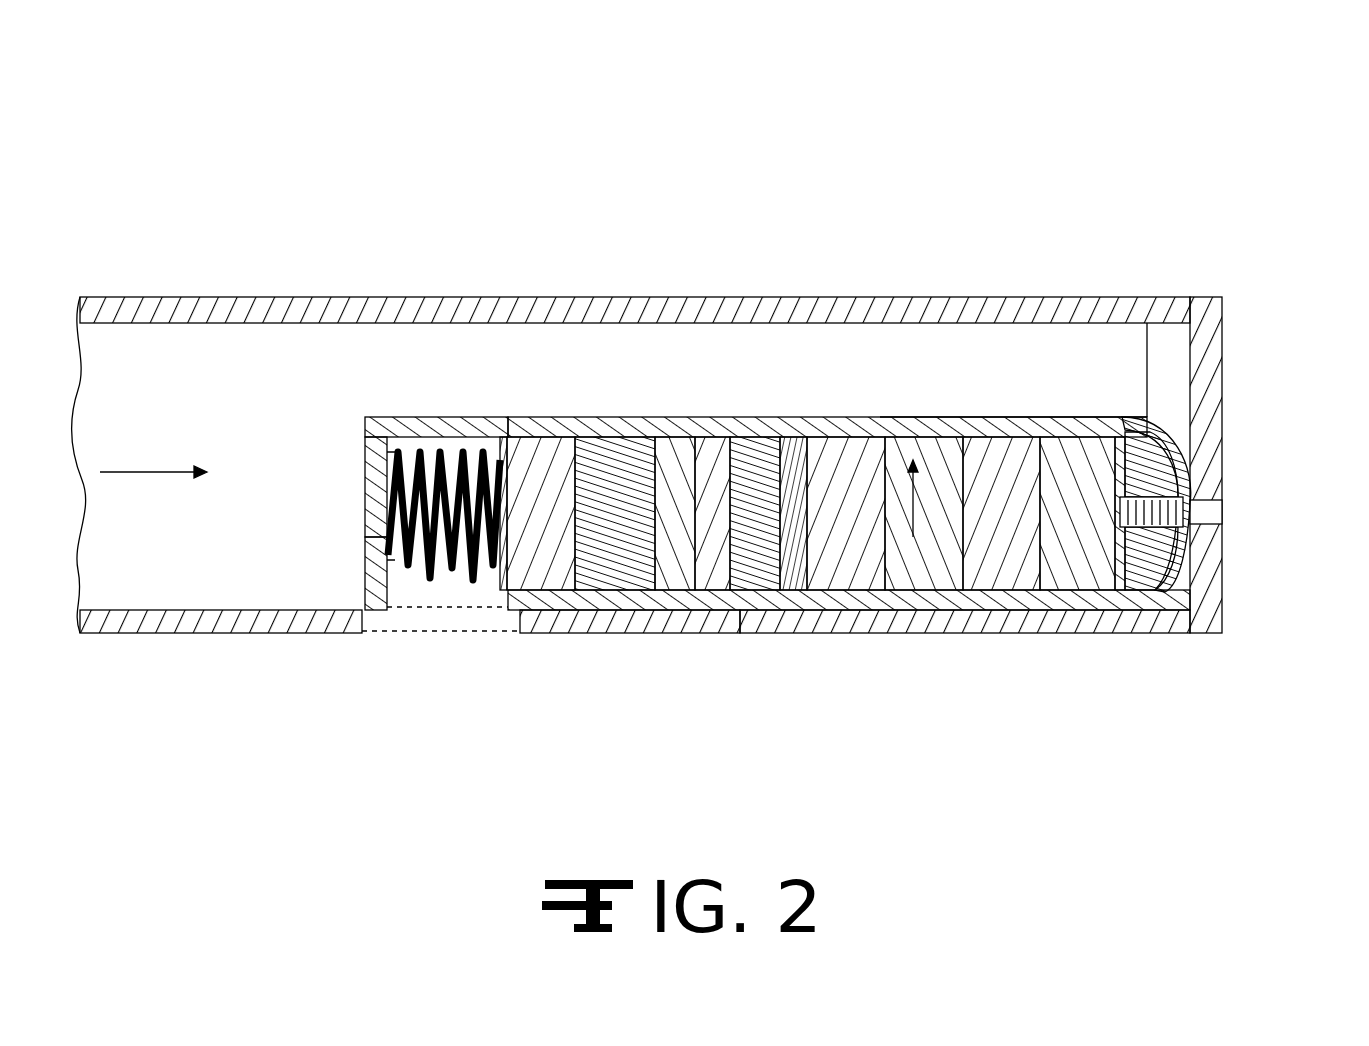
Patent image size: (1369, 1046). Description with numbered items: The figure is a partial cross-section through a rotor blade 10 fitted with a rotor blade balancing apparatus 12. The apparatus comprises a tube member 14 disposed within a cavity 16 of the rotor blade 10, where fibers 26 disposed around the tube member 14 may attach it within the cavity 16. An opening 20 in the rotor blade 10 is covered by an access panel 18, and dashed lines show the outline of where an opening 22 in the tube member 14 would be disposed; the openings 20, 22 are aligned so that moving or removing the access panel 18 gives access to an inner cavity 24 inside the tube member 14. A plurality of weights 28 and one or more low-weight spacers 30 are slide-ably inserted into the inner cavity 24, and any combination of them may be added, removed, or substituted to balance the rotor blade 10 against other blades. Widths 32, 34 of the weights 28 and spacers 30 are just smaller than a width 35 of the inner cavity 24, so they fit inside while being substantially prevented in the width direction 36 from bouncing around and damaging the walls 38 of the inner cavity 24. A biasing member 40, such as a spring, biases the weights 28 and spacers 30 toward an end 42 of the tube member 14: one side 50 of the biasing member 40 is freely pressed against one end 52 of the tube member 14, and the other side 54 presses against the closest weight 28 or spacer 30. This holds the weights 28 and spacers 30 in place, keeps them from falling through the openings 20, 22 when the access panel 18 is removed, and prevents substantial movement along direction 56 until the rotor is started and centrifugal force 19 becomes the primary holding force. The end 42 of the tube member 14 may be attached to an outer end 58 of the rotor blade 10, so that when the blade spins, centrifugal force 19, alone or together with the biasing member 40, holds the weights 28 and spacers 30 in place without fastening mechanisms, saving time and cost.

The rotor blade 10 is at (769, 214).
The rotor blade balancing apparatus 12 is at (800, 420).
The tube member 14 is at (922, 420).
The cavity 16 is at (1107, 360).
The access panel 18 is at (456, 634).
The centrifugal force 19 is at (137, 470).
The opening 20 is at (389, 635).
The opening 22 is at (365, 547).
The inner cavity 24 is at (403, 447).
The fibers 26 is at (716, 420).
The weights 28 is at (672, 437).
The low-weight spacers 30 is at (643, 633).
The width 32 is at (757, 437).
The width 34 is at (813, 520).
The width 35 is at (1147, 416).
The width direction 36 is at (920, 510).
The walls 38 is at (857, 420).
The biasing member 40 is at (430, 447).
The end 42 is at (1185, 473).
The side 50 is at (365, 480).
The end 52 is at (365, 447).
The side 54 is at (513, 418).
The direction 56 is at (550, 511).
The outer end 58 is at (1225, 548).